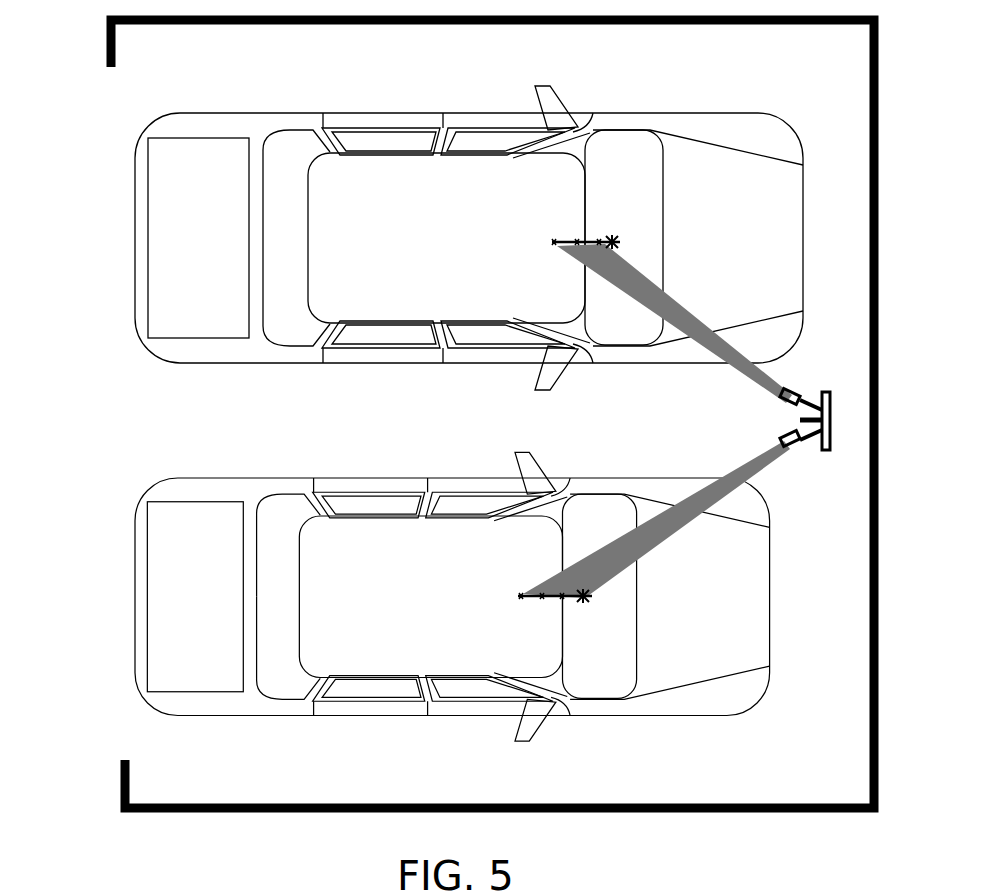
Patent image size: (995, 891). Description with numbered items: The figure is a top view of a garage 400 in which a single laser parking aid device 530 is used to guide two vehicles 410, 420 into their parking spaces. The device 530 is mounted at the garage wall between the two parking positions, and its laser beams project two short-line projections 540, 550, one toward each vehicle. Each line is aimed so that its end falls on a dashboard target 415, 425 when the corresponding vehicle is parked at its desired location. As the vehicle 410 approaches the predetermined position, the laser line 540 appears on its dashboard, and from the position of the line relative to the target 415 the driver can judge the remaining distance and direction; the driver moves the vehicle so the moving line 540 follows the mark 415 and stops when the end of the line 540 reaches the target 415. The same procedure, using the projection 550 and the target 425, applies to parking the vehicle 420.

The garage 400 is at (200, 22).
The vehicle 410 is at (426, 113).
The vehicle 420 is at (139, 512).
The dashboard target 415 is at (615, 226).
The dashboard target 425 is at (588, 622).
The laser parking aid device 530 is at (822, 467).
The short-line projection 540 is at (564, 225).
The short-line projection 550 is at (524, 614).